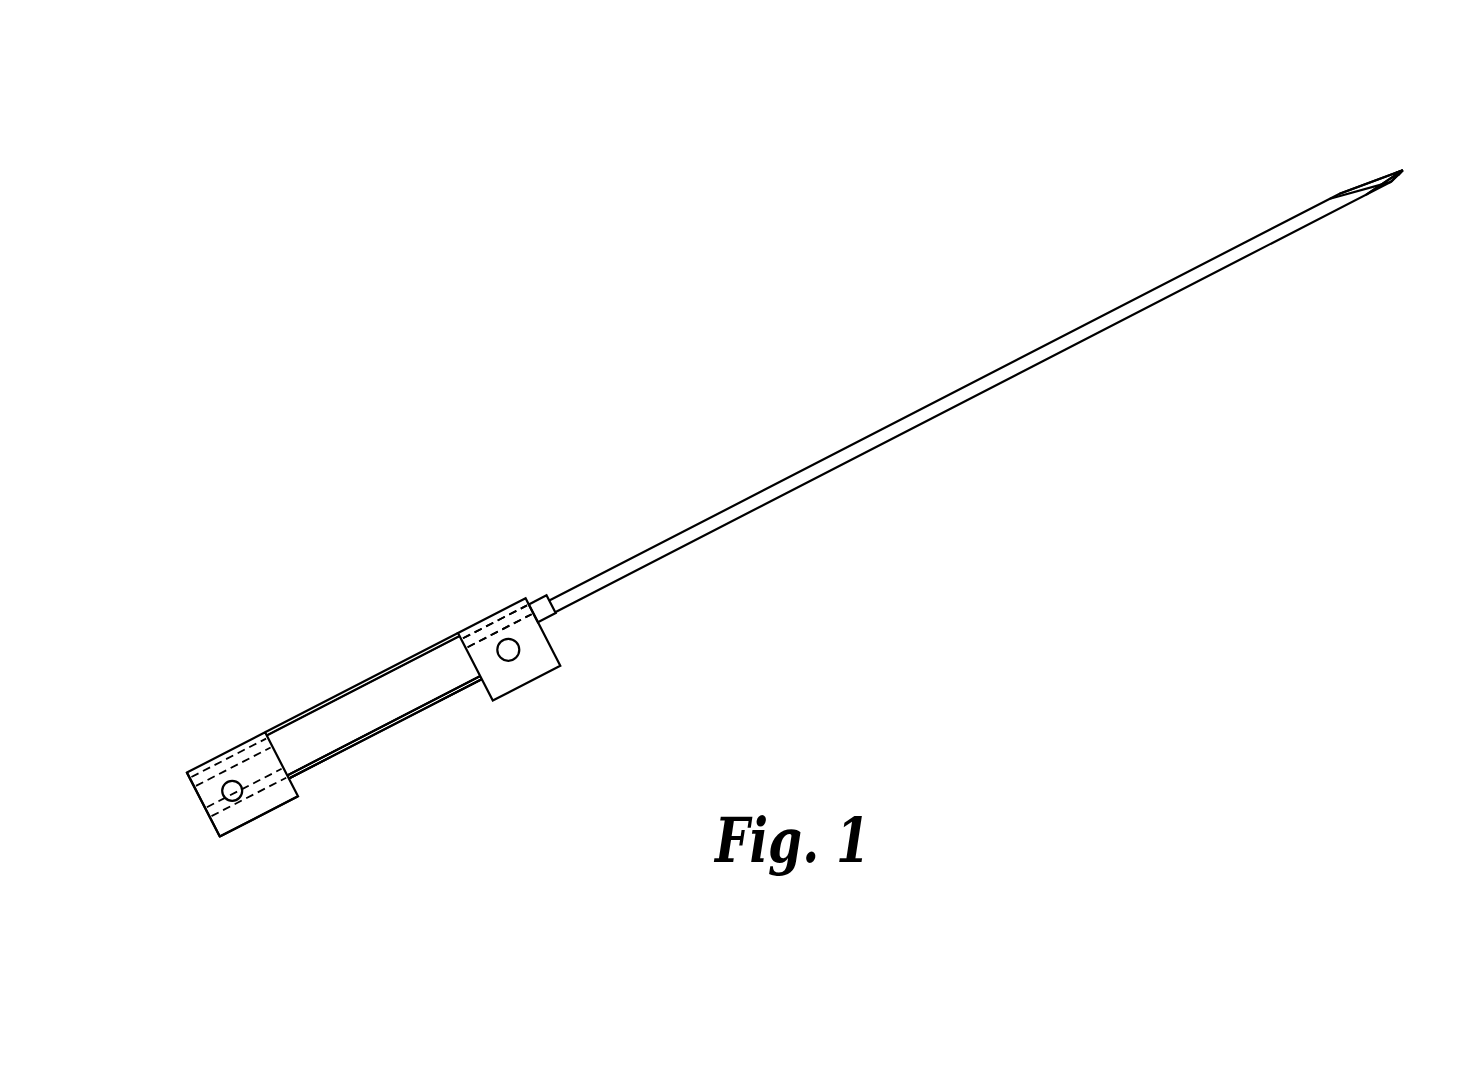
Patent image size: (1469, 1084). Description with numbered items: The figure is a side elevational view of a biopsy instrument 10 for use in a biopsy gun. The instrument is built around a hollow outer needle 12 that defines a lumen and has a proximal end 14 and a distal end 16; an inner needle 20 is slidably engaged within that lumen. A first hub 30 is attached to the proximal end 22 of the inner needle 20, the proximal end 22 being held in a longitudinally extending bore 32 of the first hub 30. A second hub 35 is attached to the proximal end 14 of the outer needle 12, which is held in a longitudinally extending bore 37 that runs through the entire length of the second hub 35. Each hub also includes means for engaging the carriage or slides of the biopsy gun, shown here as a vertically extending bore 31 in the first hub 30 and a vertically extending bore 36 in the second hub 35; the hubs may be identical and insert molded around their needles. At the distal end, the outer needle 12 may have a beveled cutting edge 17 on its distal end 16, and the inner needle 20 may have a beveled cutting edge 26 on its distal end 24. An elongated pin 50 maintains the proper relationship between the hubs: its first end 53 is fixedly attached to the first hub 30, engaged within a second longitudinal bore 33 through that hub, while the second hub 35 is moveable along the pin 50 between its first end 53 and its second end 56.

The biopsy instrument 10 is at (844, 145).
The hollow outer needle 12 is at (976, 391).
The proximal end of outer needle 14 is at (602, 631).
The distal end of outer needle 16 is at (1360, 251).
The beveled cutting edge 17 is at (1405, 234).
The inner needle 20 is at (373, 652).
The proximal end of inner needle 22 is at (374, 697).
The distal end of inner needle 24 is at (1371, 131).
The beveled cutting edge 26 is at (1430, 144).
The first hub 30 is at (215, 740).
The vertically extending bore 31 is at (168, 821).
The longitudinally extending bore 32 is at (222, 691).
The second longitudinal bore 33 is at (249, 865).
The second hub 35 is at (517, 694).
The vertically extending bore 36 is at (540, 575).
The longitudinally extending bore 37 is at (496, 549).
The elongated pin 50 is at (386, 798).
The first end of pin 53 is at (313, 839).
The second end of pin 56 is at (475, 752).